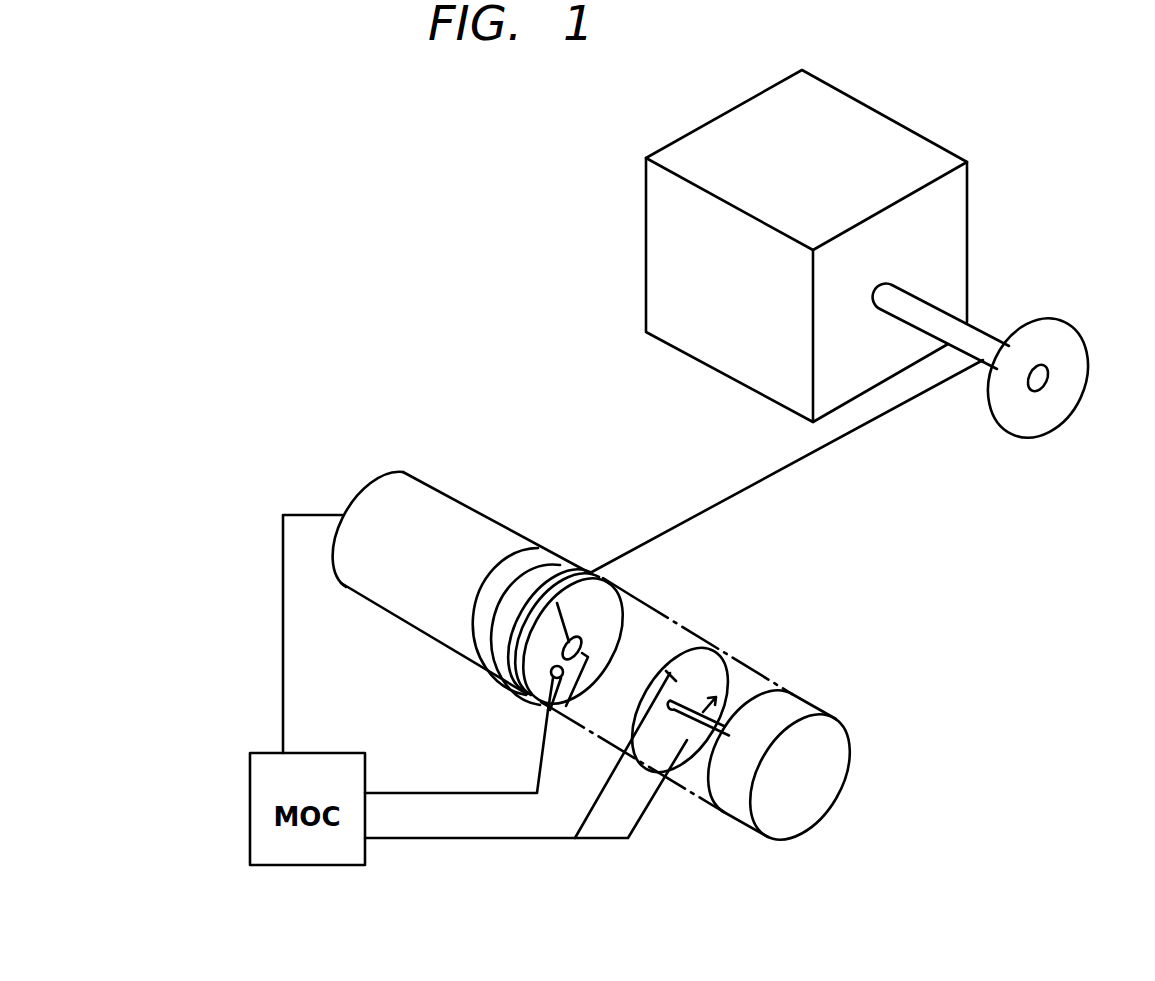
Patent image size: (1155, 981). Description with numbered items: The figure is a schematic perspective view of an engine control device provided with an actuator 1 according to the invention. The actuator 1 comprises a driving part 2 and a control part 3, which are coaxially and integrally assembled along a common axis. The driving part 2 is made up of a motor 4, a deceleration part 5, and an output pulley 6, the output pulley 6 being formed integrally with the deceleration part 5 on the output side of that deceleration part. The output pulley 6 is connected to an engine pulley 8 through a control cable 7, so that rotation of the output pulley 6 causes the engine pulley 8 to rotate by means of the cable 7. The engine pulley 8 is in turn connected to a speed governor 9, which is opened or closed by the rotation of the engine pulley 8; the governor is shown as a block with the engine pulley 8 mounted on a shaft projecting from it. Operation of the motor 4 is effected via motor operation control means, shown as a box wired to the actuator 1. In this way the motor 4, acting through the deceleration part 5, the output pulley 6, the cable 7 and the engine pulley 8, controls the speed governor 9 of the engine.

The actuator 1 is at (247, 648).
The driving part 2 is at (191, 318).
The control part 3 is at (788, 658).
The motor 4 is at (392, 490).
The deceleration part 5 is at (590, 567).
The output pulley 6 is at (511, 711).
The control cable 7 is at (695, 518).
The engine pulley 8 is at (1071, 378).
The speed governor 9 is at (921, 147).